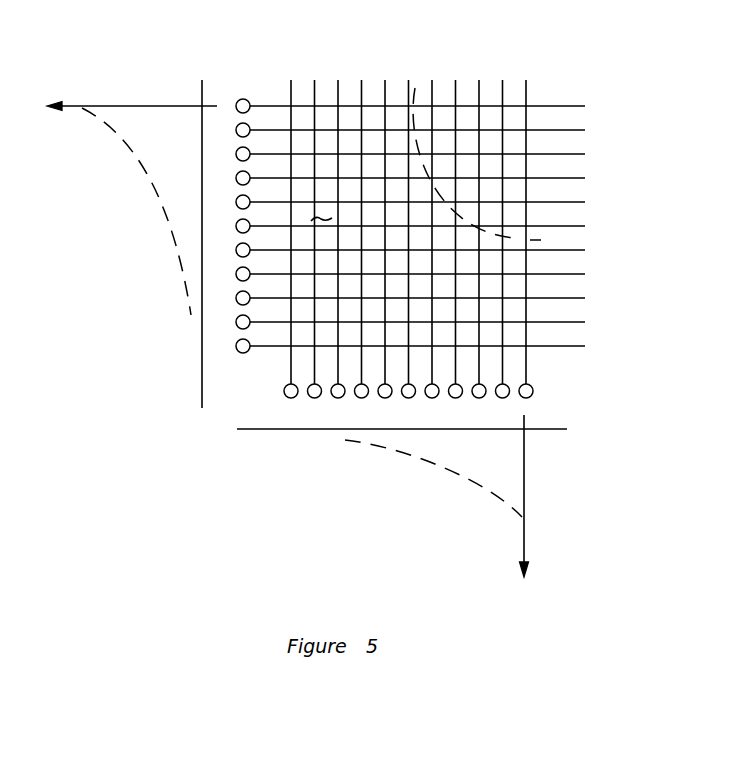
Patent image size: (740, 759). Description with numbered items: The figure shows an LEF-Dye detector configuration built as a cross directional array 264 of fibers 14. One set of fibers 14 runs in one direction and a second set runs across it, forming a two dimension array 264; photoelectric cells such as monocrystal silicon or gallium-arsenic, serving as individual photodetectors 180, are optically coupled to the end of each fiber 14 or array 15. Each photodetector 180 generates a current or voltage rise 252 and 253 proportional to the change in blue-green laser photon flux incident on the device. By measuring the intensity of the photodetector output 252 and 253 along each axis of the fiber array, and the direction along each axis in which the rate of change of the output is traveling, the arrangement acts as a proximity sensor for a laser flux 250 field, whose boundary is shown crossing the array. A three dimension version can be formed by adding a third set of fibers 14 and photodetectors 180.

The fiber 14 is at (573, 103).
The fiber array 15 is at (526, 98).
The photodetector 180 is at (281, 397).
The laser flux field 250 is at (518, 239).
The photodetector output 252 is at (89, 104).
The photodetector output 253 is at (526, 517).
The cross directional array 264 is at (321, 217).